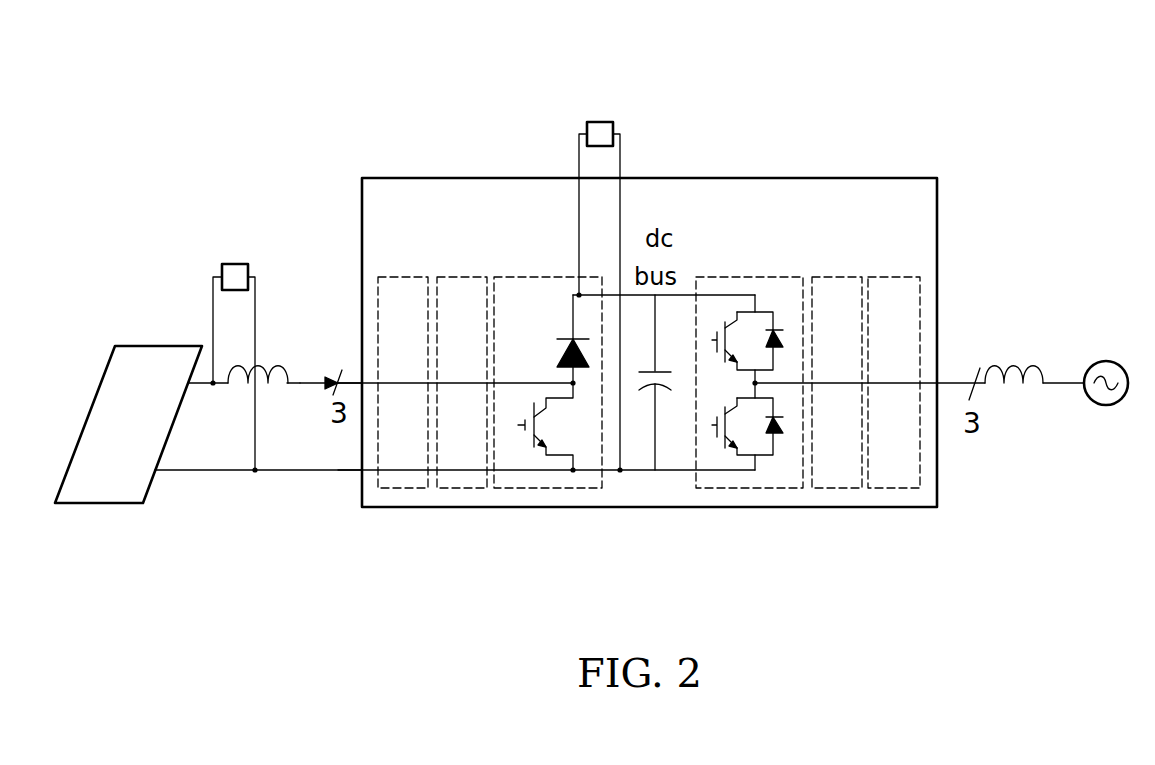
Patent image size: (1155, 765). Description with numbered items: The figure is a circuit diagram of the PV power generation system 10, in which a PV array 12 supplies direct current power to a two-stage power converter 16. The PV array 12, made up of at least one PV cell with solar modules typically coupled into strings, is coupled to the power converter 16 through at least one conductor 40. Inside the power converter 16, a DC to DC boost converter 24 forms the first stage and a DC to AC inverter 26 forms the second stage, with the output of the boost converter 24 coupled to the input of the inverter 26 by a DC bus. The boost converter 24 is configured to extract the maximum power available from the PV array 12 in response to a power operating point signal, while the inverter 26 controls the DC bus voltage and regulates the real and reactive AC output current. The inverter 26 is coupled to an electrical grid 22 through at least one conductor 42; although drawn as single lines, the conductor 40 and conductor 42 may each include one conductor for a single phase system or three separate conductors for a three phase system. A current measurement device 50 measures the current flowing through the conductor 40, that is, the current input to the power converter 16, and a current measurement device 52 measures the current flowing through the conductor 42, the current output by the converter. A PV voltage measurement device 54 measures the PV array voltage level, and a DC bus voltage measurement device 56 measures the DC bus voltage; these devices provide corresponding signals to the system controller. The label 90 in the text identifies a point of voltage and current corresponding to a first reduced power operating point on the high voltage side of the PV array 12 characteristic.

The PV power generation system 10 is at (948, 112).
The PV array 12 is at (99, 505).
The power converter 16 is at (937, 202).
The electrical grid 22 is at (1063, 433).
The DC to DC boost converter 24 is at (557, 254).
The DC to AC inverter 26 is at (727, 254).
The conductor 40 is at (355, 385).
The conductor 42 is at (952, 385).
The current measurement device 50 is at (322, 364).
The current measurement device 52 is at (986, 351).
The PV voltage measurement device 54 is at (233, 262).
The DC bus voltage measurement device 56 is at (602, 120).
The point 90 is at (562, 358).